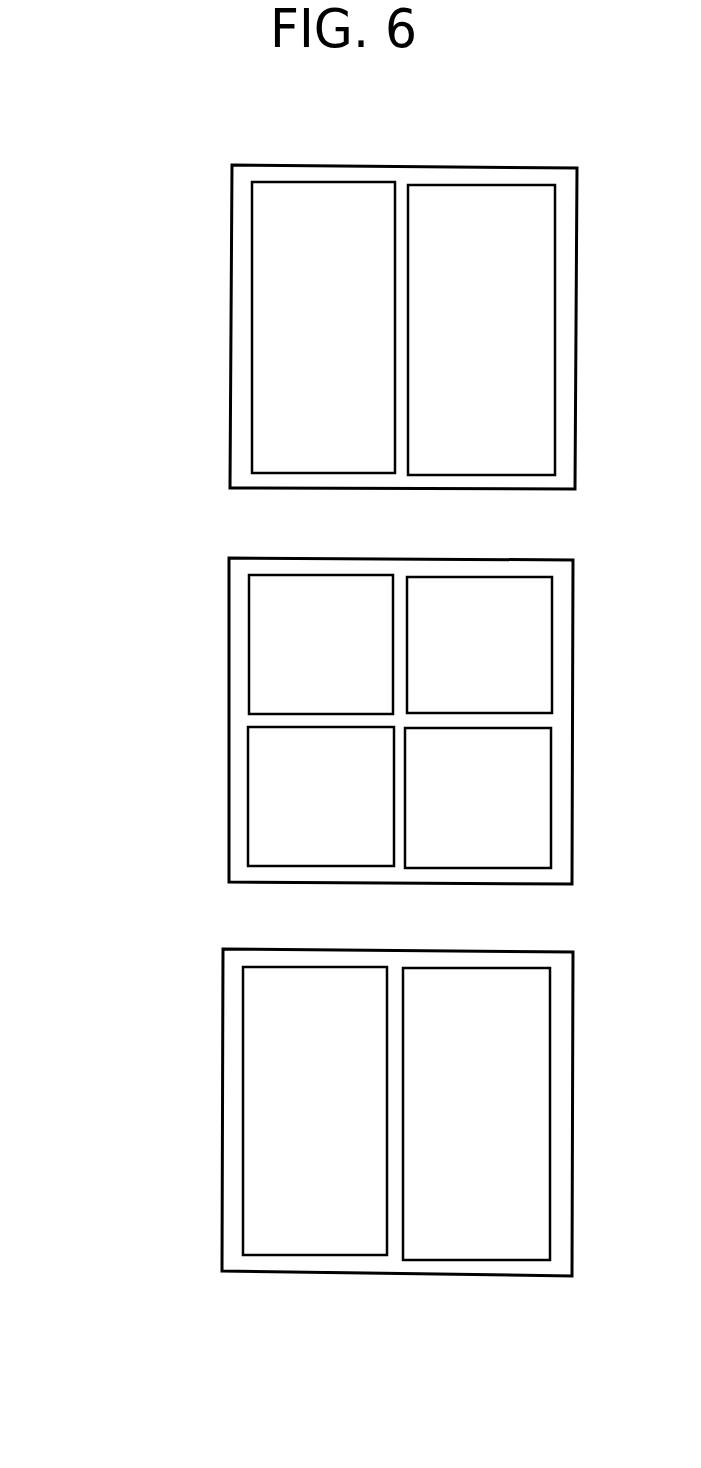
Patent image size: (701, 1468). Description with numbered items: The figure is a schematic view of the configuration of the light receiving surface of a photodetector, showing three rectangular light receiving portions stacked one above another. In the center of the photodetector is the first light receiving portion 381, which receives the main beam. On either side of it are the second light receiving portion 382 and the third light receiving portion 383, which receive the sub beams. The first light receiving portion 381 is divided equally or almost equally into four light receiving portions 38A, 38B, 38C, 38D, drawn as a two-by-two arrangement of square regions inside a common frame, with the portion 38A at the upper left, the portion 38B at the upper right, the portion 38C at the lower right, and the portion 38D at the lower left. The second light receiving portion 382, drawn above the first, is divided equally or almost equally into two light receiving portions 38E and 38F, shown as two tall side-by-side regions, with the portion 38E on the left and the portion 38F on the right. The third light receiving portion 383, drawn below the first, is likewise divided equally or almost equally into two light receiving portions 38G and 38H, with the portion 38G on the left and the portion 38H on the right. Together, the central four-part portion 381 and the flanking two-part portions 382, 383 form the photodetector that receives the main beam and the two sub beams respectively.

The first light receiving portion 381 is at (129, 541).
The second light receiving portion 382 is at (132, 134).
The third light receiving portion 383 is at (125, 1170).
The light receiving portion 38A is at (265, 638).
The light receiving portion 38B is at (460, 594).
The light receiving portion 38C is at (460, 851).
The light receiving portion 38D is at (265, 799).
The light receiving portion 38E is at (280, 261).
The light receiving portion 38F is at (474, 215).
The light receiving portion 38G is at (262, 1202).
The light receiving portion 38H is at (462, 1240).